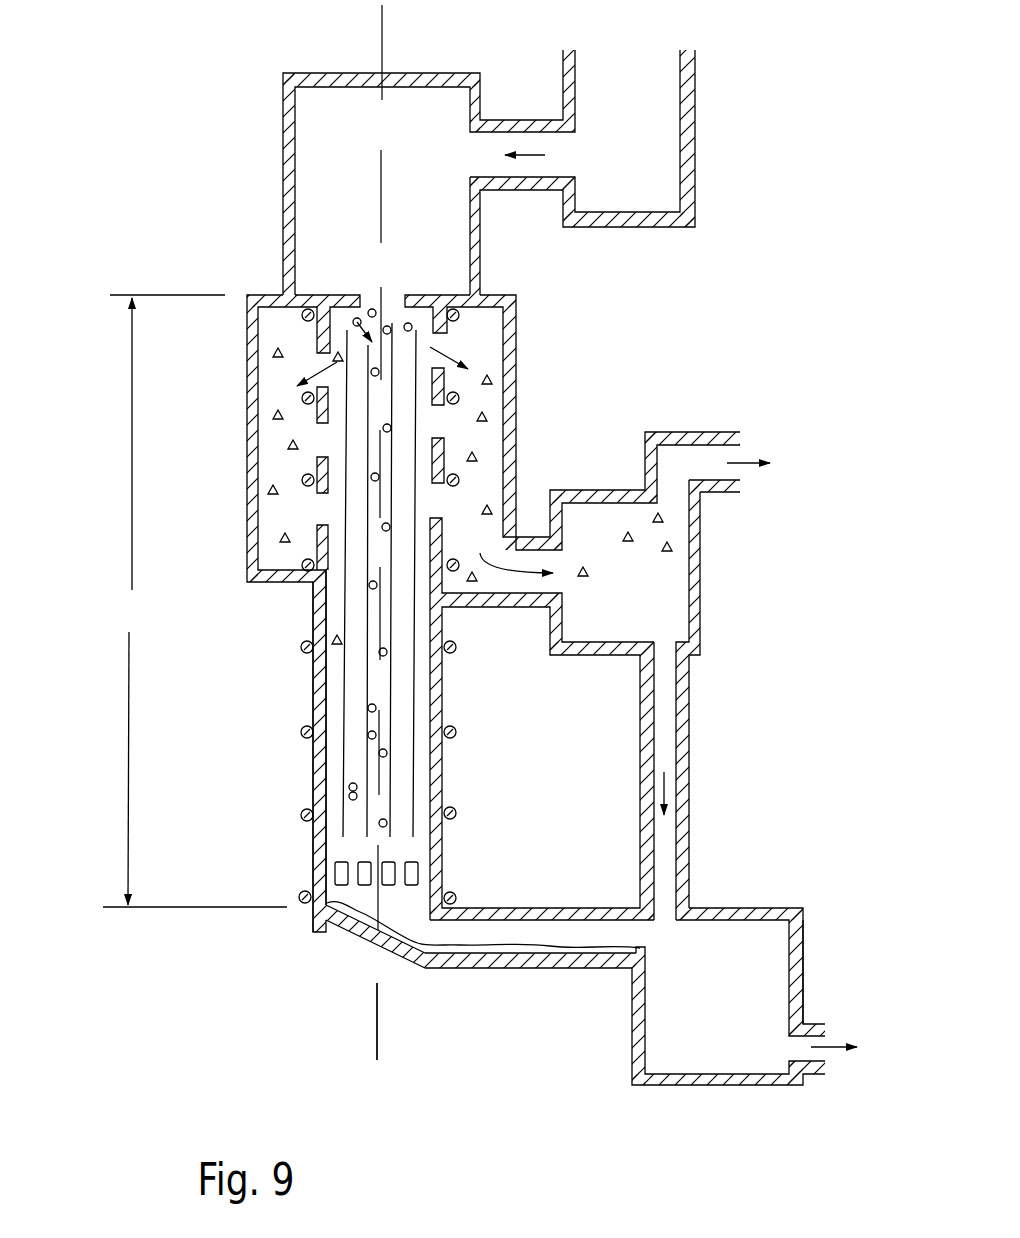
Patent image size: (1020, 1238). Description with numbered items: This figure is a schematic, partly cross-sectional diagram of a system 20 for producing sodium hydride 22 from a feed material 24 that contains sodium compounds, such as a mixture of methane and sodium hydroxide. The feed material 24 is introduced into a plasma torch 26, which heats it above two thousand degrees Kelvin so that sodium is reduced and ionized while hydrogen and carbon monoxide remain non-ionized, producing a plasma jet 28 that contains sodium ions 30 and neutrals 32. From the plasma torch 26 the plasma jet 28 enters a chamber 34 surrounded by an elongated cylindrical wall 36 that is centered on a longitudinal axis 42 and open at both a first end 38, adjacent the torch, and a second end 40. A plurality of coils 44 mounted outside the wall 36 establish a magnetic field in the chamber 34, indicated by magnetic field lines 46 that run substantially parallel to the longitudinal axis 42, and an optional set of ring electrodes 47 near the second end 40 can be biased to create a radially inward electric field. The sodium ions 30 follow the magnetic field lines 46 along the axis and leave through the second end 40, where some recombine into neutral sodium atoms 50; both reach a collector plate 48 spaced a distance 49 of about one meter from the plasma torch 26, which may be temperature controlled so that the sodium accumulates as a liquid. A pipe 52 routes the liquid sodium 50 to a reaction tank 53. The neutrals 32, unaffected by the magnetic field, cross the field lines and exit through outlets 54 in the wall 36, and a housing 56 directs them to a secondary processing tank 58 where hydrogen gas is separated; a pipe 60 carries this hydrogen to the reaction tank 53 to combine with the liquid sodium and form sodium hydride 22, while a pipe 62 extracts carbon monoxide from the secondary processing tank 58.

The system 20 is at (700, 300).
The sodium hydride 22 is at (697, 1011).
The feed material 24 is at (605, 163).
The plasma torch 26 is at (313, 209).
The plasma jet 28 is at (355, 319).
The sodium ions 30 is at (371, 309).
The neutrals 32 is at (397, 315).
The chamber 34 is at (335, 772).
The wall 36 is at (313, 693).
The first end 38 is at (320, 335).
The second end 40 is at (313, 853).
The longitudinal axis 42 is at (377, 1025).
The coils 44 is at (304, 902).
The magnetic field lines 46 is at (367, 692).
The ring electrodes 47 is at (418, 873).
The collector plate 48 is at (408, 963).
The distance 49 is at (195, 601).
The neutral sodium atoms 50 is at (358, 795).
The pipe 52 is at (575, 970).
The reaction tank 53 is at (804, 965).
The outlets 54 is at (322, 440).
The housing 56 is at (516, 455).
The secondary processing tank 58 is at (703, 575).
The pipe 60 is at (689, 783).
The pipe 62 is at (700, 432).